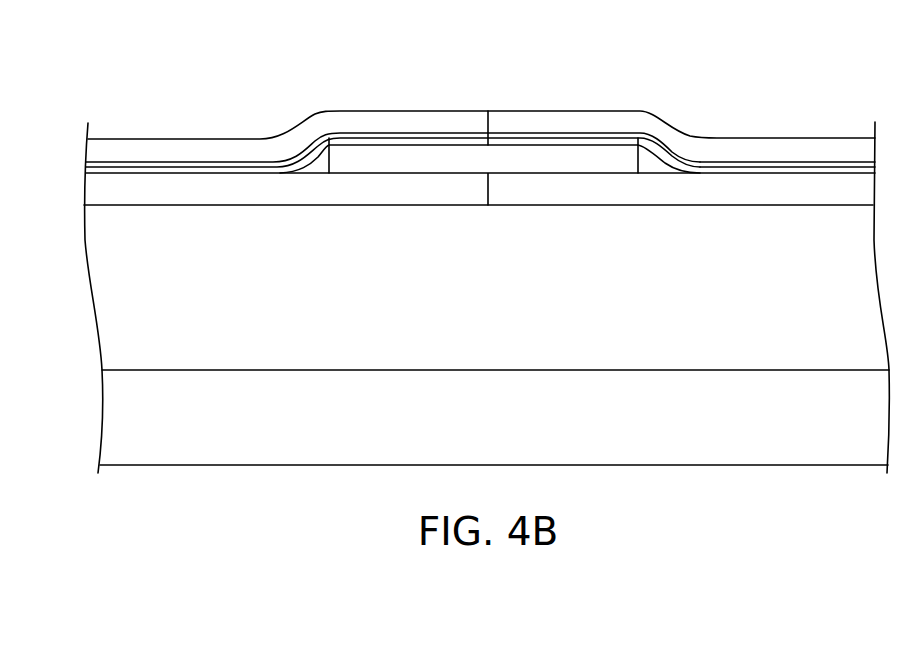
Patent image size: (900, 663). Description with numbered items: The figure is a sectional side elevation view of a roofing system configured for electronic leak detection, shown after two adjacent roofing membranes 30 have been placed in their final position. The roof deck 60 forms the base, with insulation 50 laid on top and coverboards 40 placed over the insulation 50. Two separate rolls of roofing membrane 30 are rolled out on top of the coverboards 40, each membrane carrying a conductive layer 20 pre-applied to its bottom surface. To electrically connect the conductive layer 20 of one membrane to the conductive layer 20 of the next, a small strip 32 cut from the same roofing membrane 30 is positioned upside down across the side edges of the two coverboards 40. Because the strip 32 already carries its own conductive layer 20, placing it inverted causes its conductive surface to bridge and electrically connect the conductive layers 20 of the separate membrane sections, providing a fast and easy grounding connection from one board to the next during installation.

The conductive layer 20 is at (363, 142).
The roofing membrane 30 is at (418, 128).
The strip of roofing membrane 32 is at (555, 157).
The coverboard 40 is at (735, 190).
The insulation 50 is at (777, 230).
The roof deck 60 is at (805, 400).